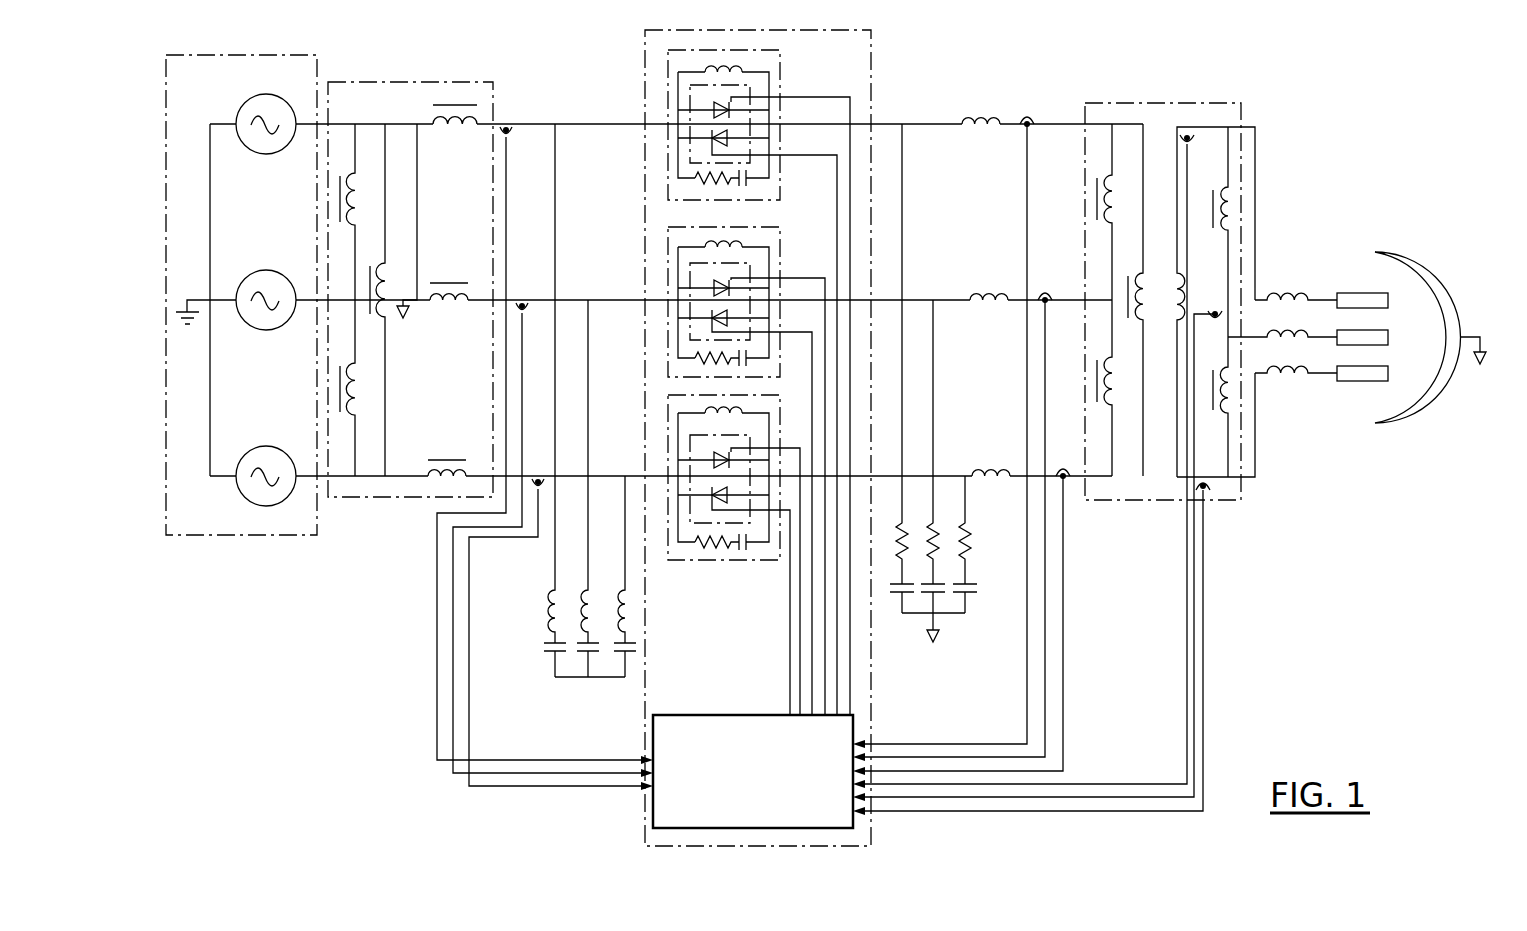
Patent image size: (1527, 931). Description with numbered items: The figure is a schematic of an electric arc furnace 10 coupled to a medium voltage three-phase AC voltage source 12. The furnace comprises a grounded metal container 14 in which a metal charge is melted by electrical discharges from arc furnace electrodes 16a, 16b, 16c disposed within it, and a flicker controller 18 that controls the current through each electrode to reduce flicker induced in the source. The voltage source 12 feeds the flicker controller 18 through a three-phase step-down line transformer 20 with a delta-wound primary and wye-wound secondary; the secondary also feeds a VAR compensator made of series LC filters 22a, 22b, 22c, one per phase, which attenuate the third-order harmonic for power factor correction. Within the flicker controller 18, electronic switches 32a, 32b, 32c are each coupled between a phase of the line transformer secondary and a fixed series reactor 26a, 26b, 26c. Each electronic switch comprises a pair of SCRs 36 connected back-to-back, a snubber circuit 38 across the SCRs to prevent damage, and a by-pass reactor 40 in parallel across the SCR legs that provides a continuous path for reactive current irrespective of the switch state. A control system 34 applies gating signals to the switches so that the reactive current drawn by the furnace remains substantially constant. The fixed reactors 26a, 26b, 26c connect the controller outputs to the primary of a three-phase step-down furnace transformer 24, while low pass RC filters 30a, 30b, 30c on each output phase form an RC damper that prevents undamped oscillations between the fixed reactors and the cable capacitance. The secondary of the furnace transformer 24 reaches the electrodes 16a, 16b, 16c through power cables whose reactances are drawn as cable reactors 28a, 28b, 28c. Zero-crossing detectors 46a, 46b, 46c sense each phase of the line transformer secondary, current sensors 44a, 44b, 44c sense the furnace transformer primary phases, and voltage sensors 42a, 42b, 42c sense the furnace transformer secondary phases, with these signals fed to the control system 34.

The electric arc furnace 10 is at (264, 767).
The three-phase AC voltage source 12 is at (233, 536).
The grounded metal container 14 is at (1434, 270).
The arc furnace electrode 16a is at (1358, 292).
The arc furnace electrode 16b is at (1380, 329).
The arc furnace electrode 16c is at (1360, 383).
The flicker controller 18 is at (642, 823).
The three-phase step-down line transformer 20 is at (392, 498).
The series LC filter 22a is at (528, 605).
The series LC filter 22b is at (570, 617).
The series LC filter 22c is at (611, 635).
The three-phase step-down furnace transformer 24 is at (1144, 103).
The fixed series reactor 26a is at (985, 106).
The fixed series reactor 26b is at (978, 284).
The fixed series reactor 26c is at (983, 464).
The cable reactor 28a is at (1275, 290).
The cable reactor 28b is at (1298, 331).
The cable reactor 28c is at (1287, 382).
The low pass RC filter 30a is at (893, 567).
The low pass RC filter 30b is at (944, 609).
The low pass RC filter 30c is at (981, 567).
The electronic switch 32a is at (783, 63).
The electronic switch 32b is at (781, 250).
The electronic switch 32c is at (687, 562).
The control system 34 is at (705, 713).
The pair of SCRs 36 is at (693, 92).
The snubber circuit 38 is at (766, 185).
The by-pass reactor 40 is at (725, 72).
The voltage sensor 42a is at (1196, 136).
The voltage sensor 42b is at (1212, 311).
The voltage sensor 42c is at (1208, 493).
The current sensor 44a is at (1032, 118).
The current sensor 44b is at (1048, 294).
The current sensor 44c is at (1067, 488).
The zero-crossing detector 46a is at (510, 135).
The zero-crossing detector 46b is at (520, 313).
The zero-crossing detector 46c is at (538, 480).